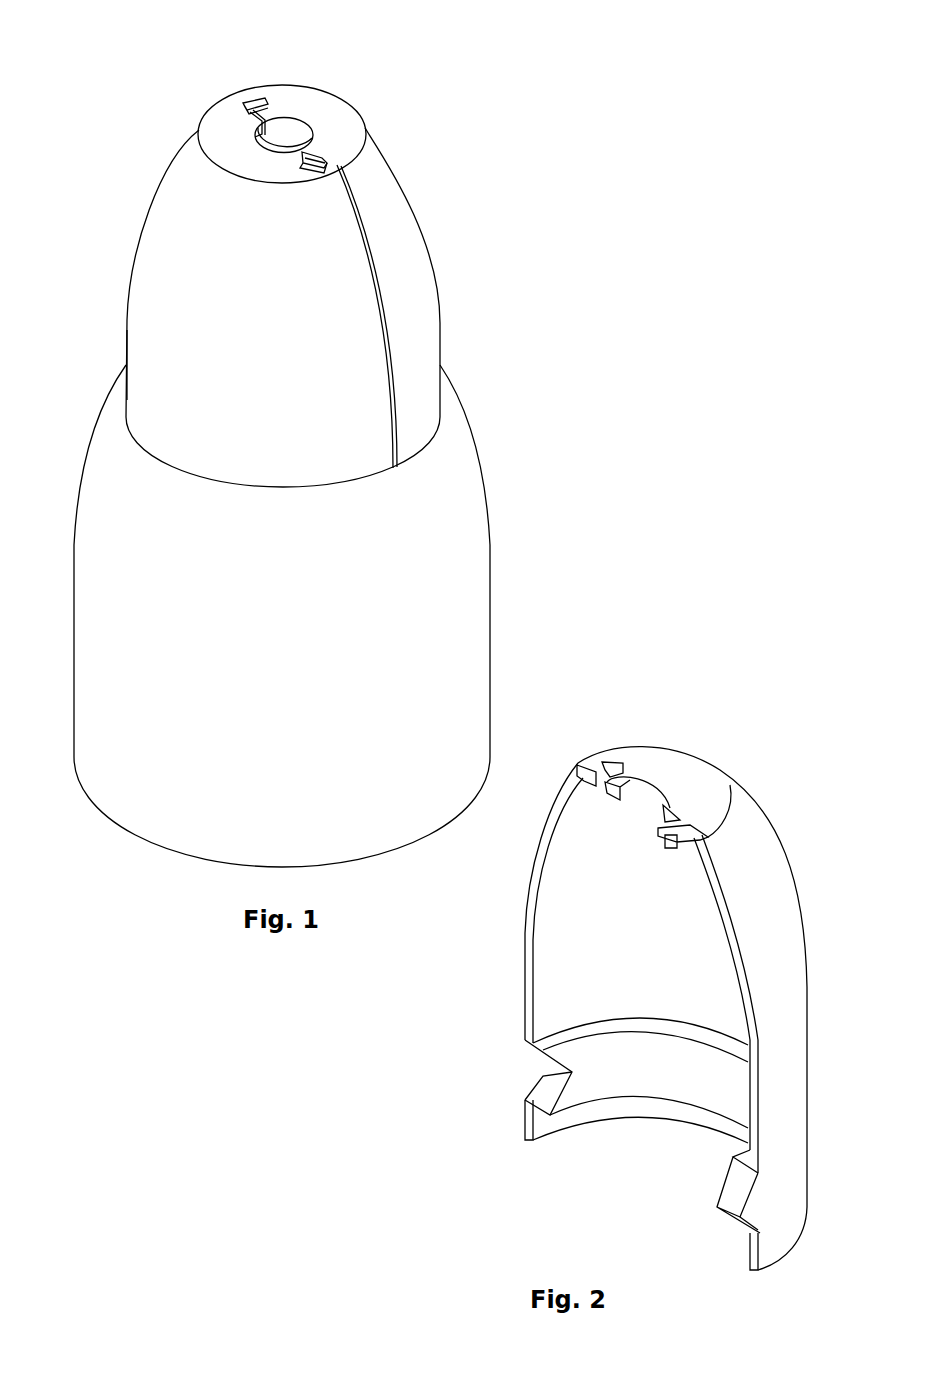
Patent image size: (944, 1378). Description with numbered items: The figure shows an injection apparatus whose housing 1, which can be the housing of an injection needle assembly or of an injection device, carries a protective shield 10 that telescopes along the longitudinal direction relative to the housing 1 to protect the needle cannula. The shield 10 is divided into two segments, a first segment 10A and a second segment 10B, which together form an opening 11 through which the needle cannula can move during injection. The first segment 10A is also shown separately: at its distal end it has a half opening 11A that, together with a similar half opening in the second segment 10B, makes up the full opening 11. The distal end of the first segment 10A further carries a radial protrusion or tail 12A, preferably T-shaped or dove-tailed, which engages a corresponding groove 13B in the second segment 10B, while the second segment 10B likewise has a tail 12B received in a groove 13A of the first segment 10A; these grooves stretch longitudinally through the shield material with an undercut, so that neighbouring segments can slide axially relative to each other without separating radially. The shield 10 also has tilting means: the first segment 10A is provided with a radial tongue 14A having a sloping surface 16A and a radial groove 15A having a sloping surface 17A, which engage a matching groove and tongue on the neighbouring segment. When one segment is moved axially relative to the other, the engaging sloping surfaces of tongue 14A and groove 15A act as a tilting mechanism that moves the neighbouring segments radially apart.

In FIG. 1, the housing 1 is at (476, 585).
In FIG. 1, the protective shield 10 is at (458, 227).
In FIG. 1, the first segment 10A is at (408, 350).
In FIG. 2, the first segment 10A is at (532, 938).
In FIG. 1, the second segment 10B is at (174, 317).
In FIG. 1, the opening 11 is at (266, 140).
In FIG. 2, the half opening 11A is at (656, 795).
In FIG. 1, the tail 12A is at (318, 156).
In FIG. 2, the tail 12A is at (680, 842).
In FIG. 1, the tail 12B is at (245, 103).
In FIG. 1, the groove 13A is at (251, 100).
In FIG. 2, the groove 13A is at (610, 762).
In FIG. 1, the groove 13B is at (305, 150).
In FIG. 2, the tongue 14A is at (730, 1213).
In FIG. 2, the groove 15A is at (543, 1073).
In FIG. 2, the sloping surface 16A is at (745, 1193).
In FIG. 2, the sloping surface 17A is at (545, 1092).